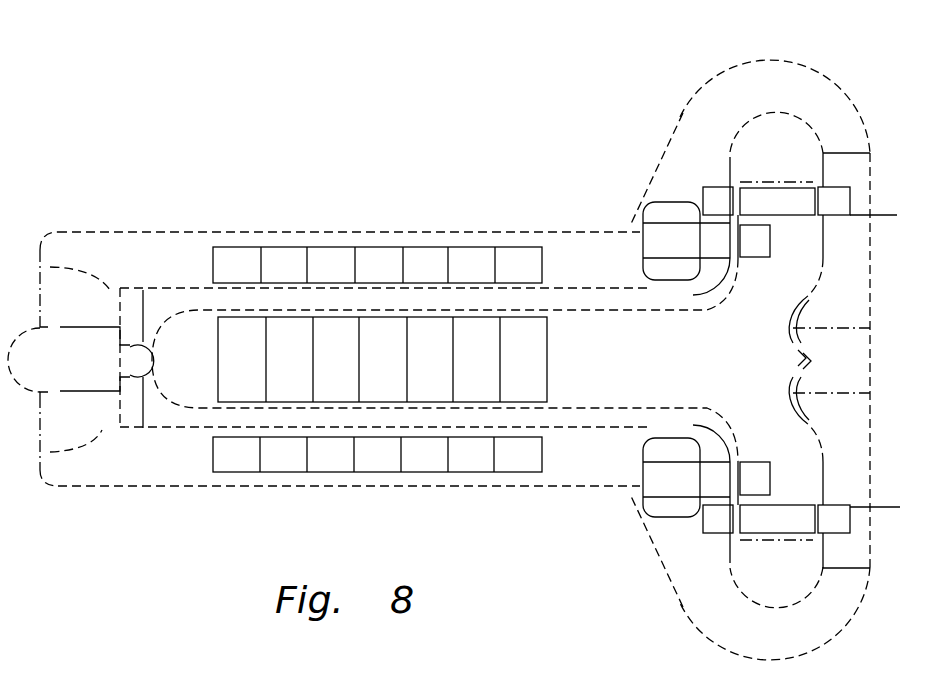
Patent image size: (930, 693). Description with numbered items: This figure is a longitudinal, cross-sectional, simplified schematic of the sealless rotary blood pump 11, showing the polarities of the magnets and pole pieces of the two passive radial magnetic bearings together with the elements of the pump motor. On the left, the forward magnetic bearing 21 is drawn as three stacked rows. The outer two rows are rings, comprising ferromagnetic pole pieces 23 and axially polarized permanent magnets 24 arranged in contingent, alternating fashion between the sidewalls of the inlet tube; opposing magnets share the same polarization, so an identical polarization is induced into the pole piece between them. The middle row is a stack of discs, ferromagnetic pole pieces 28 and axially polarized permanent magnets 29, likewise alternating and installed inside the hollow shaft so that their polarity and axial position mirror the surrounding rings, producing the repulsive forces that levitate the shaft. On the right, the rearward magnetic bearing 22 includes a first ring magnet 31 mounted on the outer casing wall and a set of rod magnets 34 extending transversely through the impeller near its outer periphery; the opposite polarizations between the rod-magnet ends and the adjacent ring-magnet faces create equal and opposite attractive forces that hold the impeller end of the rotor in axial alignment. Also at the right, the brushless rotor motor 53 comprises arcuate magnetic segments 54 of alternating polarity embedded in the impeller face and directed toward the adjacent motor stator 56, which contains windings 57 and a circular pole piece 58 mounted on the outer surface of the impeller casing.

The sealless rotary blood pump 11 is at (335, 152).
The forward magnetic bearing 21 is at (248, 492).
The rearward magnetic bearing 22 is at (801, 165).
The ferromagnetic pole pieces 23 is at (236, 253).
The axially polarized permanent magnets 24 is at (270, 253).
The ferromagnetic pole pieces 28 is at (238, 343).
The axially polarized permanent magnets 29 is at (283, 368).
The first ring magnet 31 is at (717, 187).
The rod magnets 34 is at (785, 187).
The brushless rotor motor 53 is at (650, 192).
The arcuate magnetic segments 54 is at (753, 257).
The motor stator 56 is at (650, 426).
The windings 57 is at (665, 272).
The circular pole piece 58 is at (658, 232).